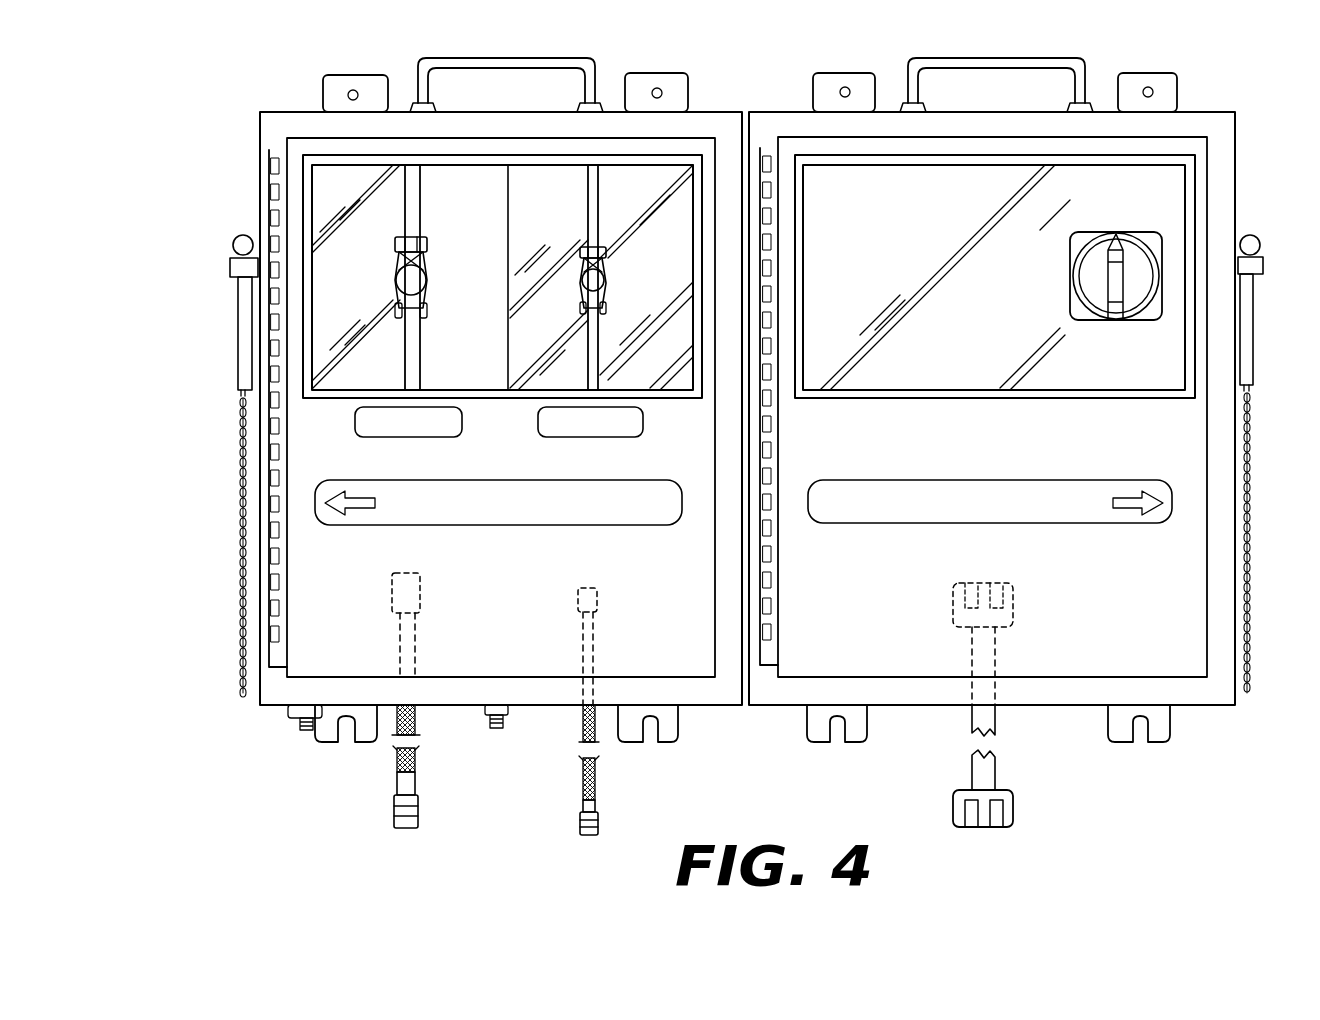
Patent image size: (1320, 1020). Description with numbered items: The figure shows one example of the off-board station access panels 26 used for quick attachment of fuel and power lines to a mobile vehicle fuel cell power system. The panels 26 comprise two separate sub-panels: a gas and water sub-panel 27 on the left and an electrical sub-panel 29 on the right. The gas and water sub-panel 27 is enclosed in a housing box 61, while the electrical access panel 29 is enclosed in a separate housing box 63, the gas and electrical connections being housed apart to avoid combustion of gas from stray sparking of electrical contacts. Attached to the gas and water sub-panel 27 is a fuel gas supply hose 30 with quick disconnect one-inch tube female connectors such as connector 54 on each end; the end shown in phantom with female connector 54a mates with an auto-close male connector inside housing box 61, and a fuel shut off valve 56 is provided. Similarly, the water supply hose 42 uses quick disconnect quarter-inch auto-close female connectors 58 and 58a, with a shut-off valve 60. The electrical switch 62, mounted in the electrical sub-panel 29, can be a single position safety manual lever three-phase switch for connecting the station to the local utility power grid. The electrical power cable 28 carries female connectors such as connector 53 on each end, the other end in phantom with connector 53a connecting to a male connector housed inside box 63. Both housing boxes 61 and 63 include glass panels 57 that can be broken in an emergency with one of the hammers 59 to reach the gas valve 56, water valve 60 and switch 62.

The off-board station access panel 26 is at (862, 52).
The gas and water sub-panel 27 is at (718, 100).
The electrical sub-panel 29 is at (1248, 92).
The housing box 61 is at (315, 120).
The housing box 63 is at (1178, 122).
The glass panel 57 is at (556, 226).
The fuel shut off valve 56 is at (426, 250).
The shut-off valve 60 is at (606, 260).
The electrical switch 62 is at (1135, 240).
The hammer 59 is at (230, 266).
The female connector 54a is at (392, 590).
The auto-close female connector 58a is at (598, 598).
The connector 53a is at (953, 600).
The fuel gas supply hose 30 is at (415, 762).
The female connector 54 is at (418, 808).
The water supply hose 42 is at (595, 782).
The auto-close female connector 58 is at (598, 824).
The electrical power cable 28 is at (995, 768).
The electrical connector 53 is at (953, 806).